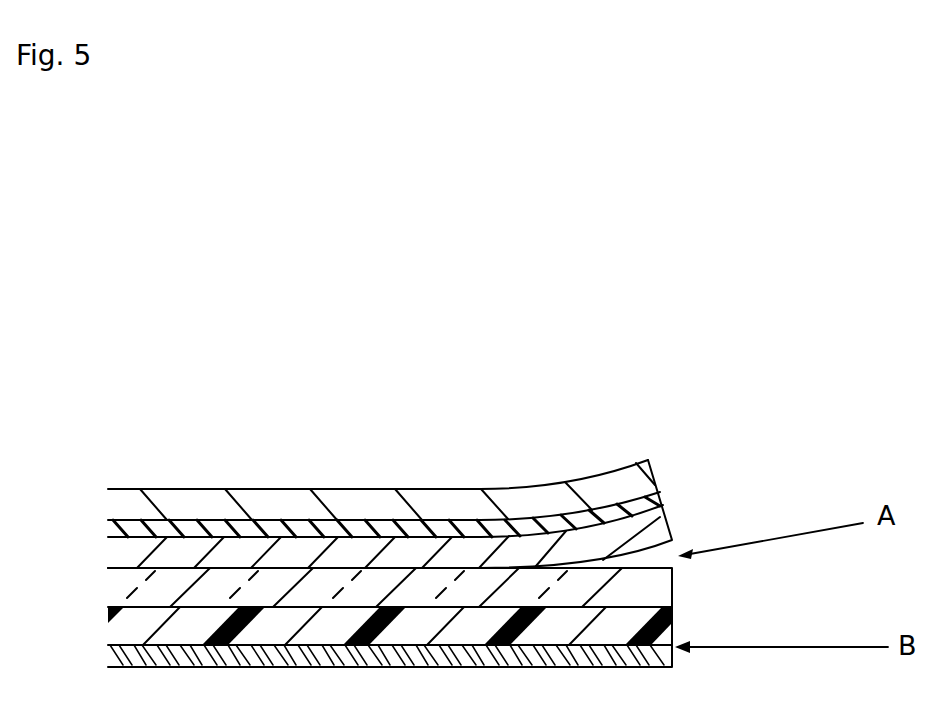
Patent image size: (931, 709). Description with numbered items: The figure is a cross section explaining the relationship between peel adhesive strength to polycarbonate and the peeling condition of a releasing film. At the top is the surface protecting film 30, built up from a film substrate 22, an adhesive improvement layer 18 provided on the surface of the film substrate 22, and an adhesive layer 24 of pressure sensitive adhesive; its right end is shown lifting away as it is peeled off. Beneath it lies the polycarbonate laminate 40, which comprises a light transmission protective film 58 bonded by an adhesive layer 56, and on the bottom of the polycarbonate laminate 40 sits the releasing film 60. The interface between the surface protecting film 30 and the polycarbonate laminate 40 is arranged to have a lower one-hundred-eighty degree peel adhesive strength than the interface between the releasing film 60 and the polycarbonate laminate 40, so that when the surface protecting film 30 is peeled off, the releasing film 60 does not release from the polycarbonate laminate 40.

The film substrate 22 is at (656, 463).
The adhesive improvement layer 18 is at (664, 491).
The adhesive layer 24 is at (433, 514).
The surface protecting film 30 is at (466, 489).
The light transmission protective film 58 is at (672, 572).
The adhesive layer 56 is at (672, 621).
The polycarbonate laminate 40 is at (490, 600).
The releasing film 60 is at (672, 657).